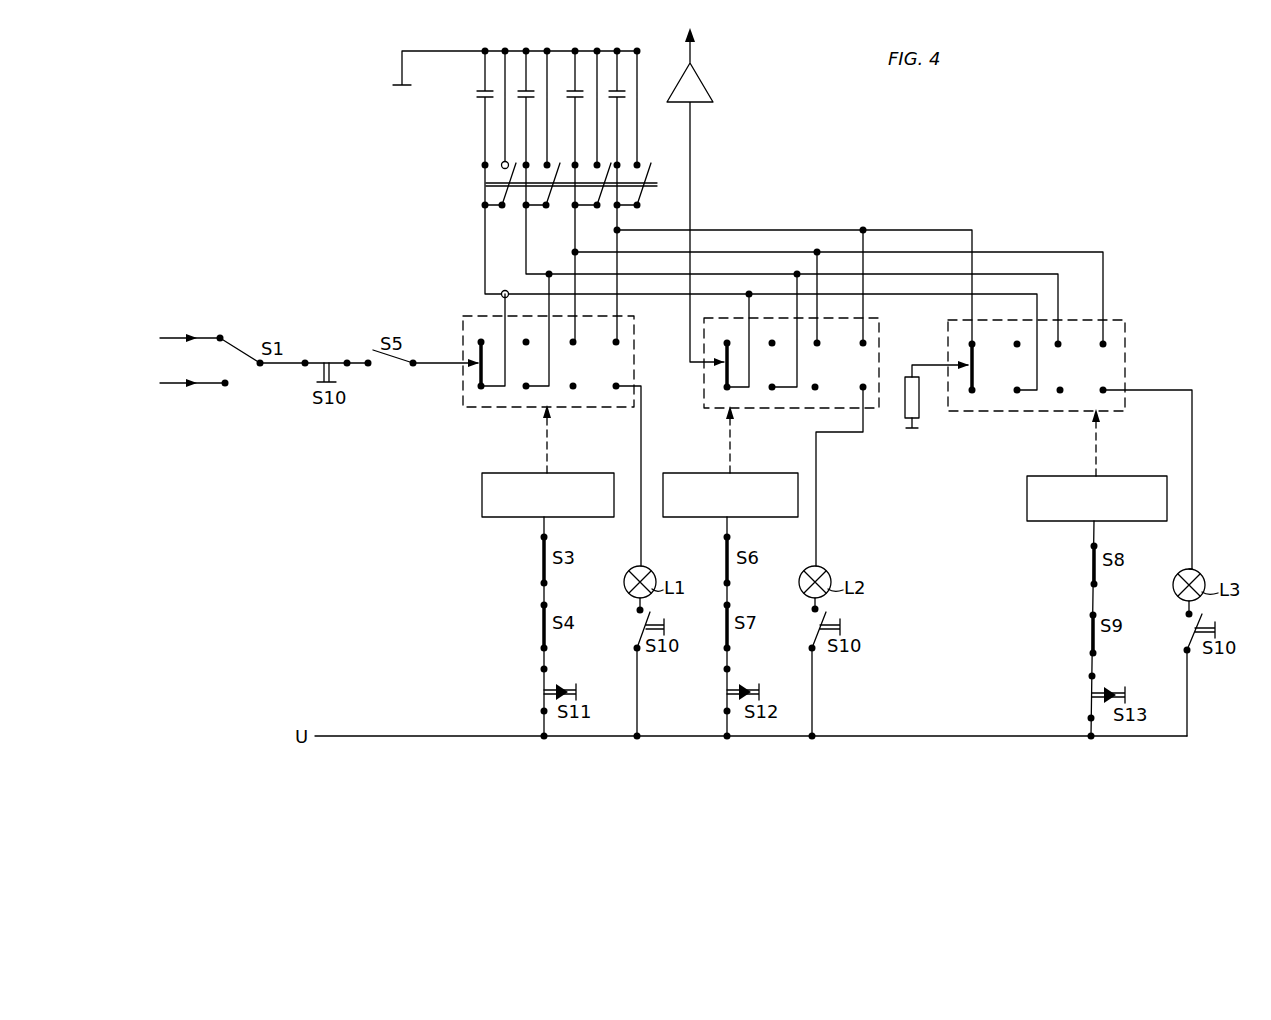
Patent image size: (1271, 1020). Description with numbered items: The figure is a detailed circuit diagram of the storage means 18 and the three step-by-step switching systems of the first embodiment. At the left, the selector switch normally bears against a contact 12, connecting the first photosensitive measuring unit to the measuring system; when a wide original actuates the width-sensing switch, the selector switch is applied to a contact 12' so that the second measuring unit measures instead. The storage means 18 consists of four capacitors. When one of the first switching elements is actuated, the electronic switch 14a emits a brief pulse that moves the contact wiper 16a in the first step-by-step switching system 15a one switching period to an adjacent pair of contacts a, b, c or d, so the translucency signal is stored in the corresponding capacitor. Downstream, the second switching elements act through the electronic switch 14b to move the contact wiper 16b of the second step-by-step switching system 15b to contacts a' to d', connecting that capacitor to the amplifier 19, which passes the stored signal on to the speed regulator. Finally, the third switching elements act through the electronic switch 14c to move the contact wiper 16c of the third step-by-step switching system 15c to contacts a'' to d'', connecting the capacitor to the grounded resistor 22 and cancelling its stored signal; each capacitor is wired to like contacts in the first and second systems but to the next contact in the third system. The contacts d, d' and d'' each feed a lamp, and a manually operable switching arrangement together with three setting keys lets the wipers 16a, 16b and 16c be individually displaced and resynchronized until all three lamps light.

The contact 12 is at (197, 327).
The contact 12' is at (202, 394).
The electronic switch 14a is at (482, 475).
The electronic switch 14b is at (678, 473).
The electronic switch 14c is at (1027, 504).
The first step-by-step switching system 15a is at (625, 330).
The second step-by-step switching system 15b is at (868, 334).
The third step-by-step switching system 15c is at (1120, 336).
The contact wiper 16a is at (463, 392).
The contact wiper 16b is at (704, 400).
The contact wiper 16c is at (963, 411).
The storage means 18 is at (485, 82).
The amplifier 19 is at (694, 88).
The grounded resistor 22 is at (910, 376).